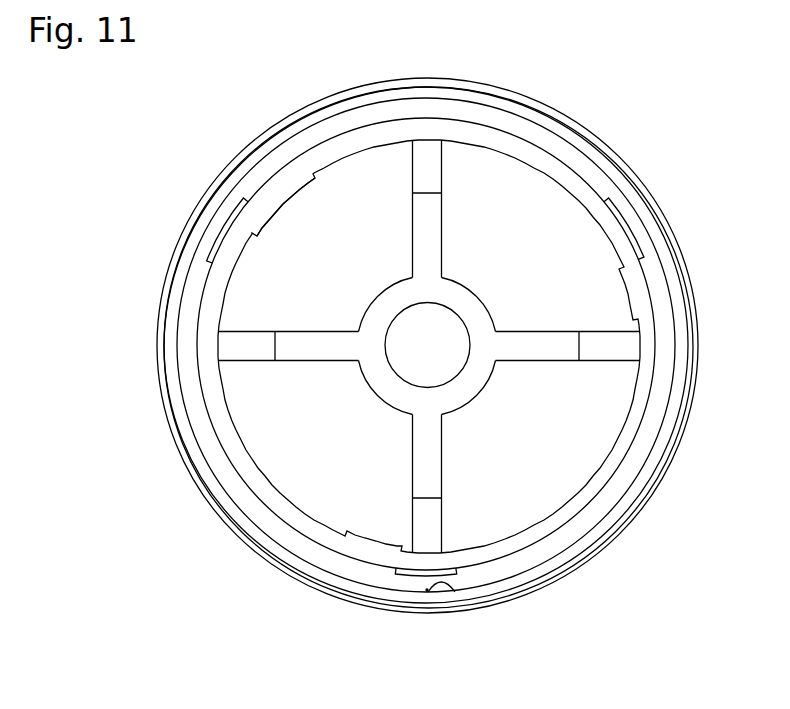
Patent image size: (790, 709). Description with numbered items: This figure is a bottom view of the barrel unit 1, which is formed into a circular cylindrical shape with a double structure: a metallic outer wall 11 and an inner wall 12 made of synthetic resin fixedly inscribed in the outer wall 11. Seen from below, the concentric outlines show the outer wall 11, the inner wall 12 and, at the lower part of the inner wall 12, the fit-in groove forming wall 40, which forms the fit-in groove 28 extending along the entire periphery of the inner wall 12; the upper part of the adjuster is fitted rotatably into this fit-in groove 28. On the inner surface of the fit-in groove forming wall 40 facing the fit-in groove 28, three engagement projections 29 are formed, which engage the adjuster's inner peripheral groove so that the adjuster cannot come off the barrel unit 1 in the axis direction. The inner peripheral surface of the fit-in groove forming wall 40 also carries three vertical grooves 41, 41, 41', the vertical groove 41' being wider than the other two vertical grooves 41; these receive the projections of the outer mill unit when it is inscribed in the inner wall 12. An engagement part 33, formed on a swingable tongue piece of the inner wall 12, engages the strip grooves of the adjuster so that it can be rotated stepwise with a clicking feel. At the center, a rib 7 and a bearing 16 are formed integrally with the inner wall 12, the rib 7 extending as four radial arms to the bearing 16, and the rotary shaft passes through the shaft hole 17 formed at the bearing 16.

The barrel unit 1 is at (538, 101).
The rib 7 is at (308, 356).
The outer wall 11 is at (689, 410).
The inner wall 12 is at (686, 364).
The bearing 16 is at (389, 284).
The shaft hole 17 is at (455, 332).
The fit-in groove 28 is at (661, 288).
The engagement projection 29 is at (229, 228).
The engagement part 33 is at (443, 583).
The fit-in groove forming wall 40 is at (648, 347).
The vertical groove 41 is at (429, 346).
The vertical groove 41' is at (286, 215).